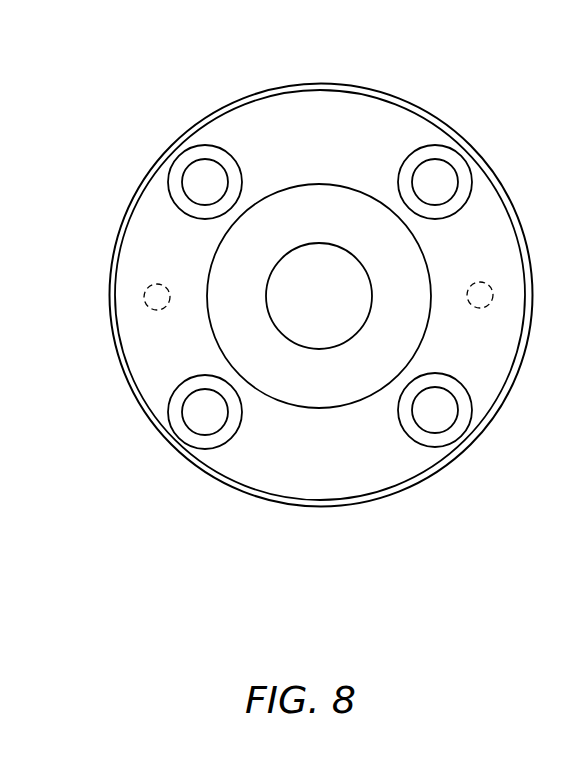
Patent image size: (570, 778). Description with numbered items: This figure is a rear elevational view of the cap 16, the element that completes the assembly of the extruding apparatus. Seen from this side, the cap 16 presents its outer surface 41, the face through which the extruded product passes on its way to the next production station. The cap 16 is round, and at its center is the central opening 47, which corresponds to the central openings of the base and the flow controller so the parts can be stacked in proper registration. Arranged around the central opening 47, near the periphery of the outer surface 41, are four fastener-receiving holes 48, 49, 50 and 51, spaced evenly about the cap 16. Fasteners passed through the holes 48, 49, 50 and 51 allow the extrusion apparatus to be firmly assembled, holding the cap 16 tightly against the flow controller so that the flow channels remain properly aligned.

The cap 16 is at (407, 487).
The outer surface 41 is at (355, 115).
The central opening 47 is at (353, 257).
The fastener-receiving hole 48 is at (192, 167).
The fastener-receiving hole 49 is at (440, 163).
The fastener-receiving hole 50 is at (450, 402).
The fastener-receiving hole 51 is at (194, 423).